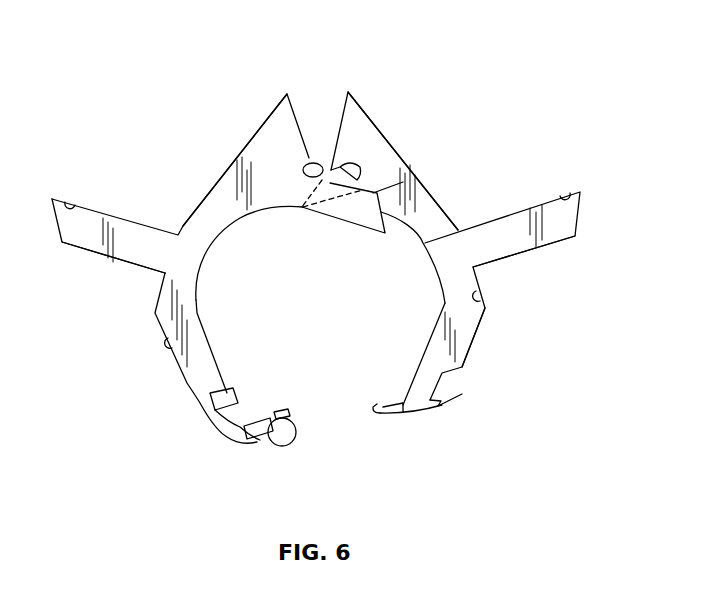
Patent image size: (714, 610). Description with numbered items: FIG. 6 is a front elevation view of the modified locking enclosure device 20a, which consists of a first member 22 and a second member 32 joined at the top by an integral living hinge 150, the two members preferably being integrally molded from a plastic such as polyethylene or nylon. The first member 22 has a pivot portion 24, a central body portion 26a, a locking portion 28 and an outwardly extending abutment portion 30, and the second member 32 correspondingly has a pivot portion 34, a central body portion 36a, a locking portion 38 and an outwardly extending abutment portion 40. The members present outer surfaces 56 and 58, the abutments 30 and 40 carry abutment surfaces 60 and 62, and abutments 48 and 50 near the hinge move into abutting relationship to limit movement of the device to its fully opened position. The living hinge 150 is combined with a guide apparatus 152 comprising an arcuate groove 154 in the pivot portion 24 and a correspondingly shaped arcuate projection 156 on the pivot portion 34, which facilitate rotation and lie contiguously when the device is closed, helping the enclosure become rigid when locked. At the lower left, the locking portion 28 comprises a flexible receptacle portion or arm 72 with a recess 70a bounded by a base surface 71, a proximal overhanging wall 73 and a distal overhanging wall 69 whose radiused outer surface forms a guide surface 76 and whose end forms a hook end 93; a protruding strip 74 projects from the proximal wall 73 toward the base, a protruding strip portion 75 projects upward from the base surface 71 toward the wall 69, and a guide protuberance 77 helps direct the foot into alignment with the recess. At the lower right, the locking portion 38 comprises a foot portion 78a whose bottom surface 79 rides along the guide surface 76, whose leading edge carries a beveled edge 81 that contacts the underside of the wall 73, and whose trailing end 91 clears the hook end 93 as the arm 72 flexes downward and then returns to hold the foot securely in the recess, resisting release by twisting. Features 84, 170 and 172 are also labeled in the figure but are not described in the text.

The modified locking enclosure device 20a is at (157, 126).
The first member 22 is at (186, 197).
The pivot portion 24 is at (283, 197).
The first leg 26a is at (197, 275).
The locking portion 28 is at (215, 422).
The abutment portion 30 is at (82, 242).
The second member 32 is at (471, 199).
The pivot portion 34 is at (415, 193).
The second leg 36a is at (440, 285).
The locking portion 38 is at (470, 330).
The abutment portion 40 is at (524, 242).
The abutment 48 is at (276, 107).
The abutment 50 is at (357, 108).
The outer surface 56 is at (168, 343).
The outer surface 58 is at (483, 297).
The abutment surface 60 is at (67, 203).
The abutment surface 62 is at (565, 196).
The distal overhanging wall 69 is at (267, 443).
The recess 70a is at (248, 423).
The base surface 71 is at (212, 406).
The flexible receptacle portion 72 is at (277, 447).
The proximal overhanging wall 73 is at (210, 383).
The protruding strip 74 is at (230, 390).
The protruding strip portion 75 is at (230, 440).
The guide surface 76 is at (300, 425).
The guide protuberance 77 is at (290, 412).
The foot portion 78a is at (393, 403).
The bottom surface 79 is at (402, 420).
The beveled edge 81 is at (373, 412).
The foot tab 84 is at (432, 417).
The trailing end 91 is at (462, 393).
The hook end 93 is at (252, 437).
The living hinge 150 is at (321, 158).
The guide apparatus 152 is at (360, 242).
The arcuate groove 154 is at (333, 207).
The arcuate projection 156 is at (363, 163).
The link 170 is at (403, 182).
The arch edge 172 is at (423, 245).